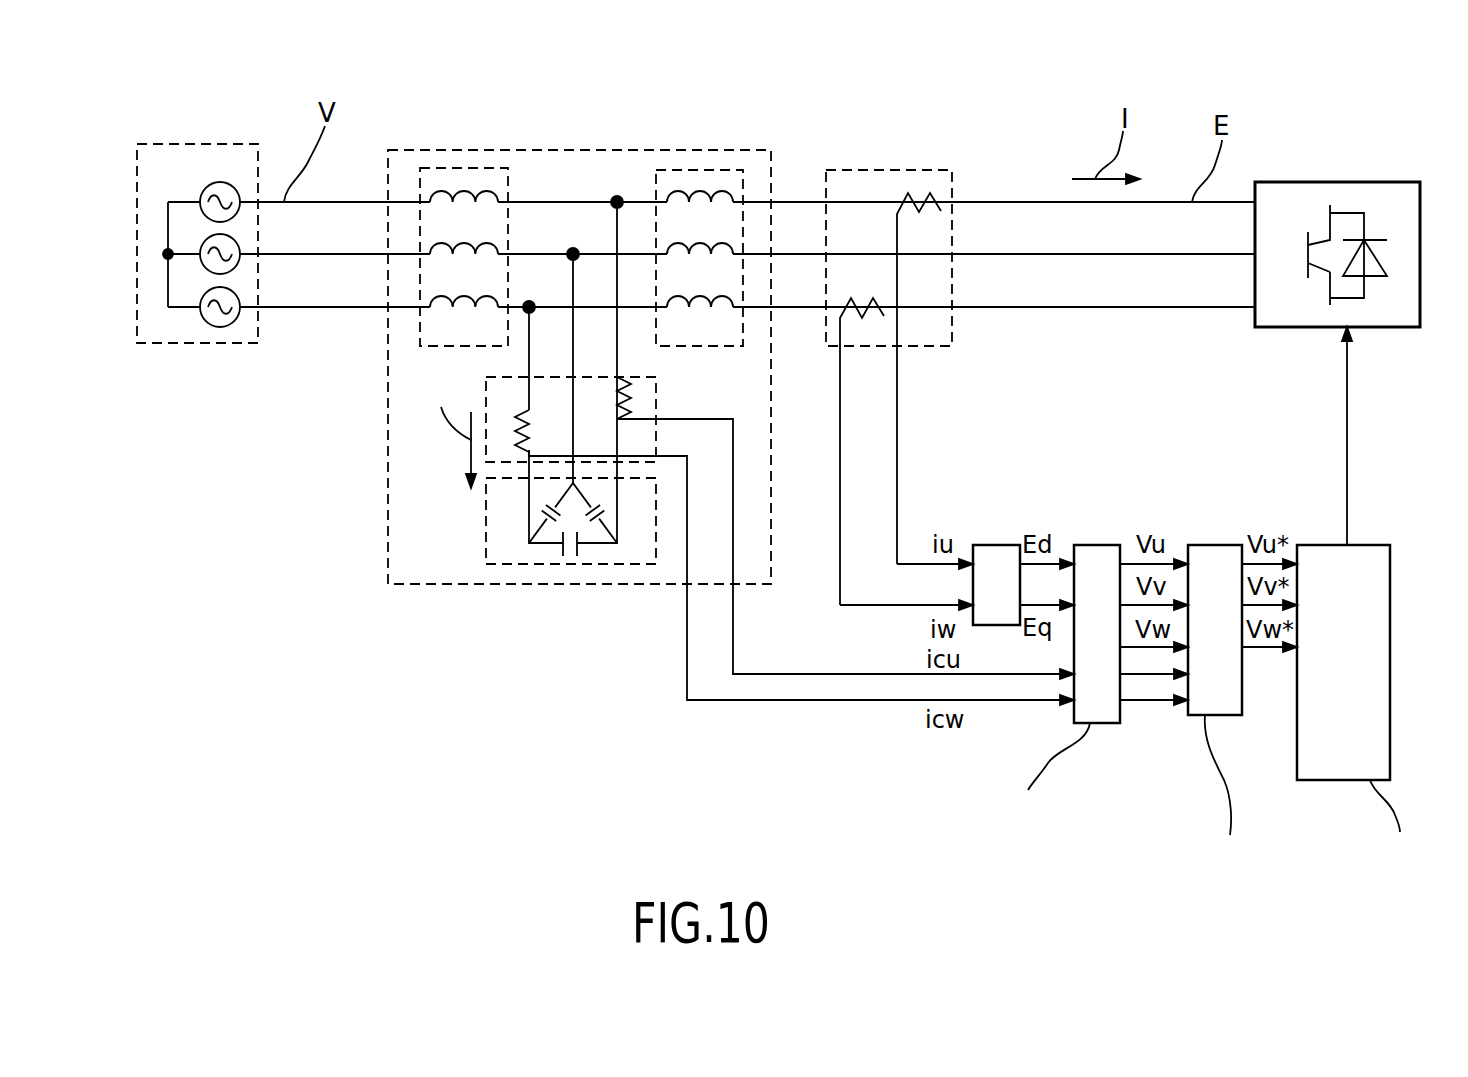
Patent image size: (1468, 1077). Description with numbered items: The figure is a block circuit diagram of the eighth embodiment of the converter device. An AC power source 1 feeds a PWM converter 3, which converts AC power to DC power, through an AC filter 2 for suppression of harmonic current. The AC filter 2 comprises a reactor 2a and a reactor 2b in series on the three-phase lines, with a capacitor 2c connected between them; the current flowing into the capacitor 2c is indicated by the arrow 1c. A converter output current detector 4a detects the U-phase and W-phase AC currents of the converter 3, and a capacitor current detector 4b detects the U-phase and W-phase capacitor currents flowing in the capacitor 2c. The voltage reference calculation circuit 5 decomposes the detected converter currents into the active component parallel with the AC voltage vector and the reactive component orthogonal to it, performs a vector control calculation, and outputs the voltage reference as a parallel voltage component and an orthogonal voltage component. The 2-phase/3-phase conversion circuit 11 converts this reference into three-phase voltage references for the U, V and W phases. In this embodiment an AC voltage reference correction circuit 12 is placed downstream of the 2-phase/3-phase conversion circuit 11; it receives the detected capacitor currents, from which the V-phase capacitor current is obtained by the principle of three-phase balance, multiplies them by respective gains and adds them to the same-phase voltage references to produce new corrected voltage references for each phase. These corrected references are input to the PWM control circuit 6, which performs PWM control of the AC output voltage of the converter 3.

The AC power source 1 is at (172, 144).
The current flowing into AC filter capacitor 1c is at (452, 433).
The AC filter 2 is at (566, 170).
The reactor 2a is at (440, 168).
The reactor 2b is at (688, 168).
The capacitor 2c is at (637, 543).
The PWM converter 3 is at (1290, 182).
The converter output current detector 4a is at (847, 182).
The capacitor current detector 4b is at (656, 395).
The voltage reference calculation circuit 5 is at (997, 545).
The PWM control circuit 6 is at (1368, 545).
The 2-phase/3-phase conversion circuit 11 is at (1117, 545).
The AC voltage reference correction circuit 12 is at (1238, 545).